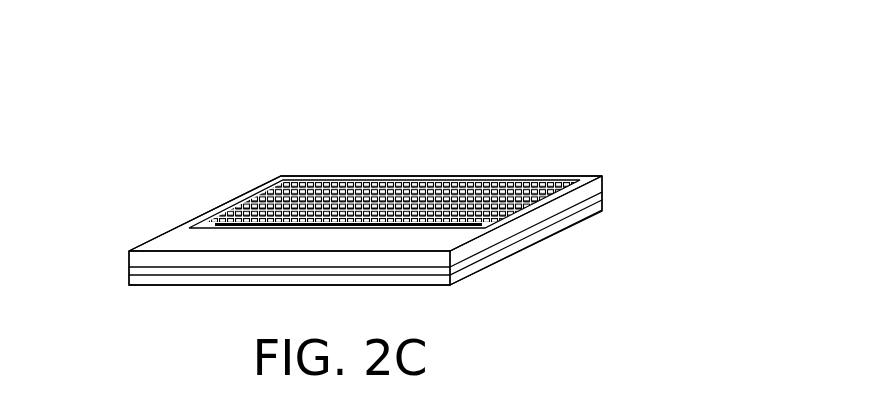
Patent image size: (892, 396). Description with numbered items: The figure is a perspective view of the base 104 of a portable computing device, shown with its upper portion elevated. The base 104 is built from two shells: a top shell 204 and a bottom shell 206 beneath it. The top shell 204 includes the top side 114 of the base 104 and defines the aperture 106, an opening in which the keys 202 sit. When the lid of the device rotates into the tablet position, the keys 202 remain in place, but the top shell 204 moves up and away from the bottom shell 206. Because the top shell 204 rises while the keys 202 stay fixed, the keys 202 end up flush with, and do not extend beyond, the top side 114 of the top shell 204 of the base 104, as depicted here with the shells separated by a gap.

The base 104 is at (112, 258).
The top side 114 is at (174, 232).
The aperture 106 is at (578, 171).
The keys 202 is at (338, 178).
The top shell 204 is at (610, 180).
The bottom shell 206 is at (509, 253).